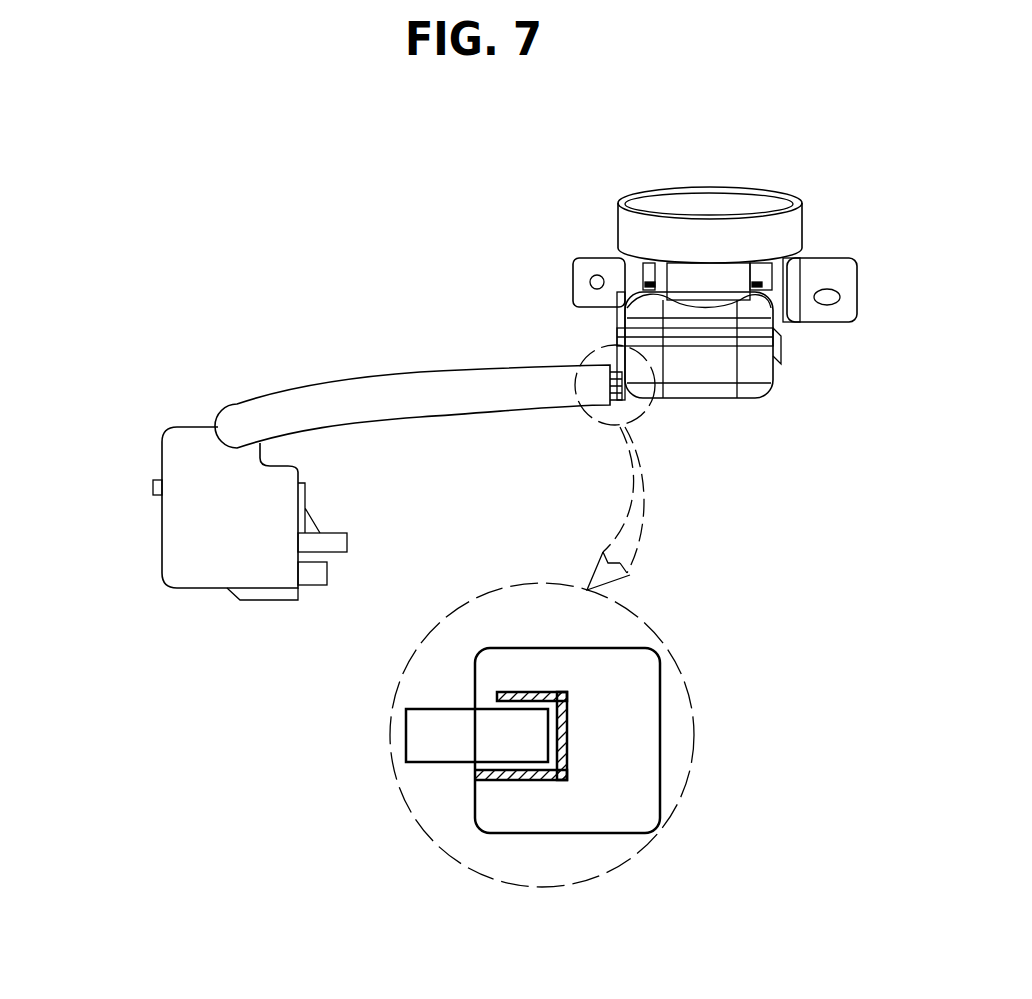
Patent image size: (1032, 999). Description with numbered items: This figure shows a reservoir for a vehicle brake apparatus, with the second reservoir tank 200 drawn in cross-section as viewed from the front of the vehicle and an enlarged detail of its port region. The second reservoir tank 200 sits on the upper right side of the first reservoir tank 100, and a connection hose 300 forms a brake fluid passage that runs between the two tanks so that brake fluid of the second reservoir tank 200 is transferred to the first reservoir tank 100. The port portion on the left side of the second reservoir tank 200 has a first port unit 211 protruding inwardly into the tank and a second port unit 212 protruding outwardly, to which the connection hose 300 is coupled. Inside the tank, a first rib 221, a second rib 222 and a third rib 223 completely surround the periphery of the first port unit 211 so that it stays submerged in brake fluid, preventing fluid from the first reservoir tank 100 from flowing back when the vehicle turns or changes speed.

The first reservoir tank 100 is at (172, 428).
The connection hose 300 is at (374, 377).
The second reservoir tank 200 is at (767, 283).
The first port unit 211 is at (438, 763).
The second port unit 212 is at (453, 728).
The first rib 221 is at (527, 781).
The second rib 222 is at (567, 730).
The third rib 223 is at (532, 692).